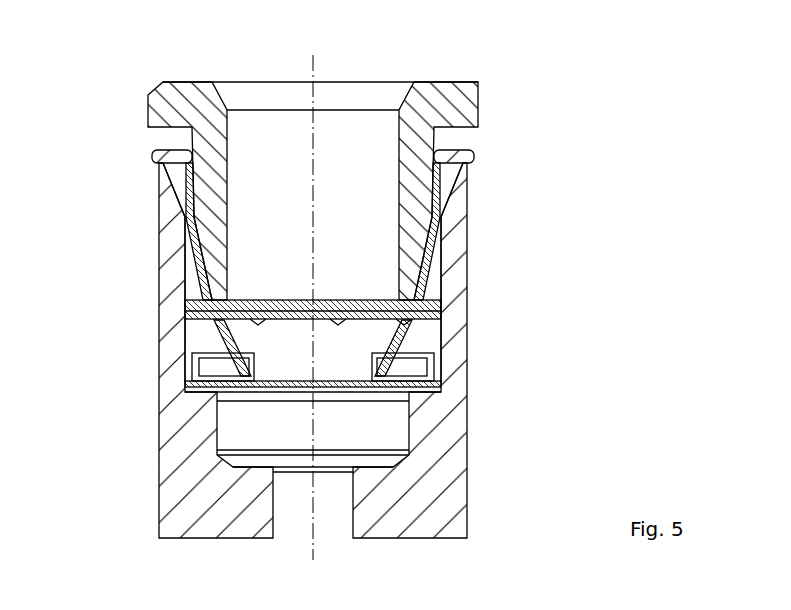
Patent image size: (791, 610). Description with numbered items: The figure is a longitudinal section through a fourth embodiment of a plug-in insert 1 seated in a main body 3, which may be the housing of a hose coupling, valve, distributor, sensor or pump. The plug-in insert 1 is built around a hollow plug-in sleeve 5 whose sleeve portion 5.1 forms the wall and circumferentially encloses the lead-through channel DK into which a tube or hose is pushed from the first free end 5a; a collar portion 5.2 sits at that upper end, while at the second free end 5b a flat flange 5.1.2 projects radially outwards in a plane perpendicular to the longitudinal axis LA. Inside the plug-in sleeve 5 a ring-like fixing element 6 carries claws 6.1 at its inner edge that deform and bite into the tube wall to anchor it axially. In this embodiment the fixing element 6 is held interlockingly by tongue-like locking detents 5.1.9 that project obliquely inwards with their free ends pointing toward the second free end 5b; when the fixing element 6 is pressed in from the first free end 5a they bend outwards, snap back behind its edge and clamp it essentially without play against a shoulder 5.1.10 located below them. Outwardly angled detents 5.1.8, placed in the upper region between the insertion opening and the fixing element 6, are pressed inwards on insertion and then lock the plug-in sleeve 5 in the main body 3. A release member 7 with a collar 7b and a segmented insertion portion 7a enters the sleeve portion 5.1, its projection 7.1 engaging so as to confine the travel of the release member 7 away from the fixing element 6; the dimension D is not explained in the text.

The plug-in insert 1 is at (628, 84).
The main body 3 is at (175, 497).
The plug-in sleeve 5 is at (325, 315).
The first free end 5a is at (134, 137).
The second free end 5b is at (408, 416).
The sleeve portion 5.1 is at (468, 256).
The collar portion 5.2 is at (488, 160).
The flange 5.1.2 is at (198, 395).
The detents 5.1.8 is at (449, 221).
The locking detents 5.1.9 is at (436, 300).
The shoulder 5.1.10 is at (376, 338).
The fixing element 6 is at (300, 300).
The claws 6.1 is at (433, 333).
The release member 7 is at (293, 163).
The insertion portion 7a is at (200, 183).
The collar 7b is at (480, 104).
The projection 7.1 is at (186, 215).
The seal plate D is at (262, 404).
The lead-through channel DK is at (265, 72).
The longitudinal axis LA is at (306, 548).